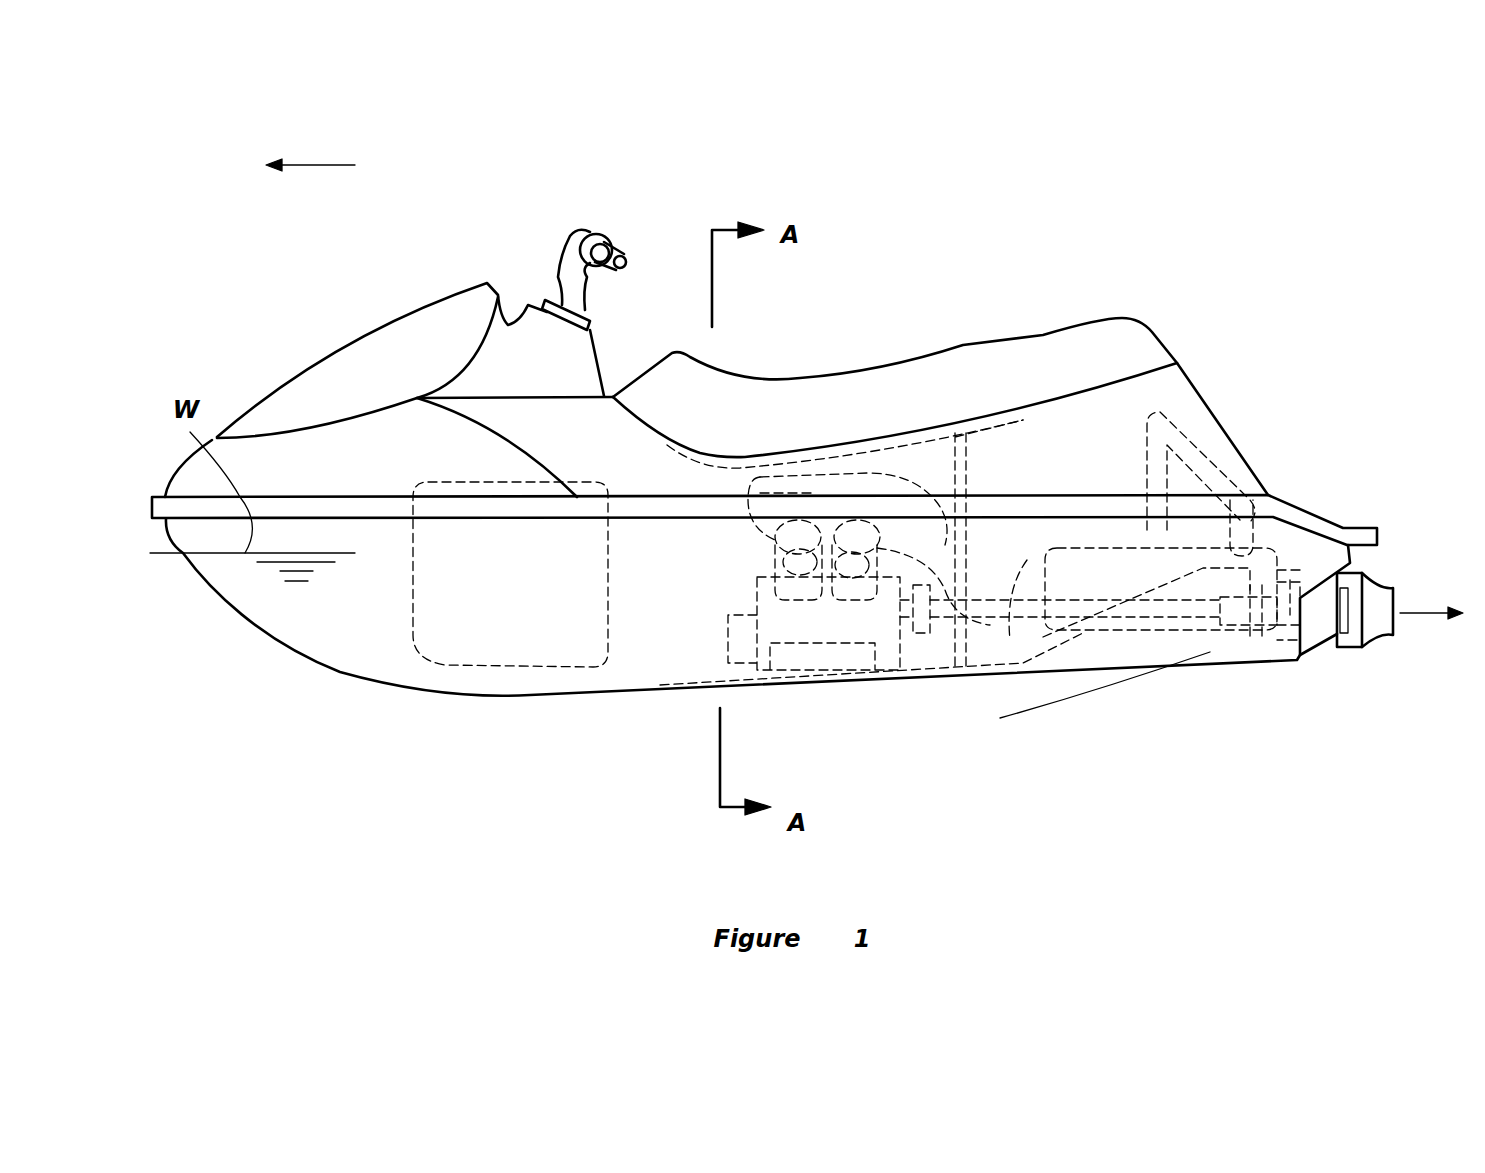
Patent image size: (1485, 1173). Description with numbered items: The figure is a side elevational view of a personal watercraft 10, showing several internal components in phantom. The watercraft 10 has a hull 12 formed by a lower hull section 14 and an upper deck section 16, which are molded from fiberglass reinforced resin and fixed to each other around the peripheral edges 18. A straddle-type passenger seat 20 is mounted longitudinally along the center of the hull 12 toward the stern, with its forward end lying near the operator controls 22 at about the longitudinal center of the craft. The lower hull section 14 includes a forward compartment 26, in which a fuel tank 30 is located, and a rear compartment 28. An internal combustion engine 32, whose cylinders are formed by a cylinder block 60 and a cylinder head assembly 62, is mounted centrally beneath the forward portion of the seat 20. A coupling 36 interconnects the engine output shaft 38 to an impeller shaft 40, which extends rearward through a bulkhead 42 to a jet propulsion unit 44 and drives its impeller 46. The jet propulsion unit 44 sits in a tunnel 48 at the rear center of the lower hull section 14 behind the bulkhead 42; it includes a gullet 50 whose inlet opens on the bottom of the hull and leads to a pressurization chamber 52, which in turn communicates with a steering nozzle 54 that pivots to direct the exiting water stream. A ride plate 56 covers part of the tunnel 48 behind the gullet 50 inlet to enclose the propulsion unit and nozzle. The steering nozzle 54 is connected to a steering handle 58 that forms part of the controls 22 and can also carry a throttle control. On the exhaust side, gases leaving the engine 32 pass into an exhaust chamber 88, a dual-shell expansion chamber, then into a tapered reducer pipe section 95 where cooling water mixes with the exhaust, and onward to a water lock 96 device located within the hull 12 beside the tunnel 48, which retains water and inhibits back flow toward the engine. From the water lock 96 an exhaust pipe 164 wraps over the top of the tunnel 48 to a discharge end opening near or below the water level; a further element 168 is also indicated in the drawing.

The watercraft 10 is at (1250, 278).
The hull 12 is at (1282, 381).
The lower hull section 14 is at (637, 677).
The upper deck section 16 is at (640, 425).
The peripheral edges 18 is at (678, 507).
The passenger seat 20 is at (925, 385).
The controls 22 is at (553, 261).
The forward compartment 26 is at (383, 455).
The rear compartment 28 is at (1035, 437).
The fuel tank 30 is at (468, 663).
The internal combustion engine 32 is at (798, 458).
The coupling 36 is at (920, 643).
The engine output shaft 38 is at (898, 652).
The impeller shaft 40 is at (967, 673).
The bulkhead 42 is at (978, 417).
The jet propulsion unit 44 is at (1318, 640).
The impeller 46 is at (1268, 668).
The tunnel 48 is at (1158, 652).
The gullet 50 is at (1107, 680).
The pressurization chamber 52 is at (1210, 663).
The steering nozzle 54 is at (1375, 618).
The ride plate 56 is at (1177, 667).
The steering handle 58 is at (627, 253).
The cylinder block 60 is at (783, 660).
The cylinder head assembly 62 is at (827, 643).
The exhaust chamber 88 is at (857, 472).
The reducer pipe section 95 is at (997, 560).
The water lock 96 is at (1120, 543).
The exhaust pipe 164 is at (1223, 467).
The control cable 168 is at (1027, 560).